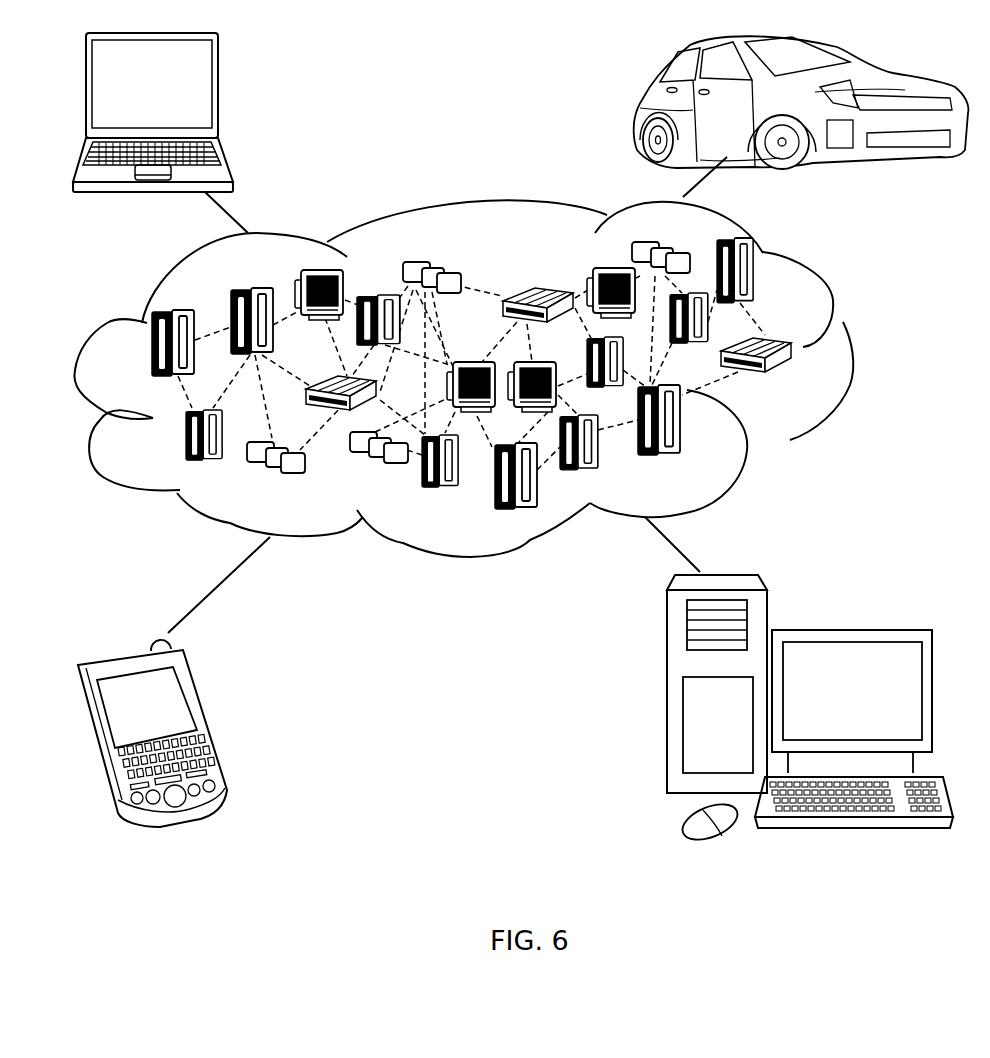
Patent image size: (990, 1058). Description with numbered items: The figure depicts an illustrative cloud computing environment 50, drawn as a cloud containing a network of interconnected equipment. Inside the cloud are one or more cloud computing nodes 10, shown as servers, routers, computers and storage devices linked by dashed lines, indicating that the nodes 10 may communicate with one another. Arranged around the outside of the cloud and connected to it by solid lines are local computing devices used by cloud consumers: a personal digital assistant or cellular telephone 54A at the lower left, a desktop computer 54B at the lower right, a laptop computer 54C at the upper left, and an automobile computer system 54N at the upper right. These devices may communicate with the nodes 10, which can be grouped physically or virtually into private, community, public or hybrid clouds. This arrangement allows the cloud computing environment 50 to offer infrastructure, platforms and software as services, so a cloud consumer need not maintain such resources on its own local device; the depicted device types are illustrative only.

The cloud computing nodes 10 is at (807, 386).
The cloud computing environment 50 is at (850, 353).
The personal digital assistant (PDA) or cellular telephone 54A is at (208, 717).
The desktop computer 54B is at (850, 630).
The laptop computer 54C is at (220, 92).
The automobile computer system 54N is at (640, 108).